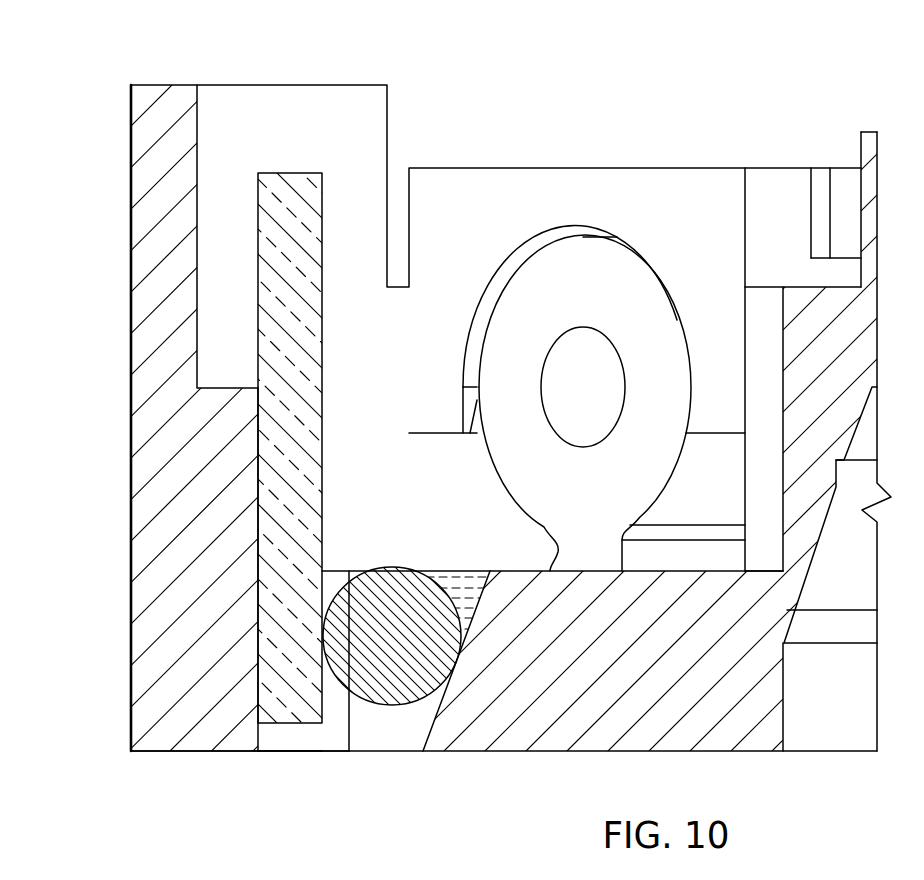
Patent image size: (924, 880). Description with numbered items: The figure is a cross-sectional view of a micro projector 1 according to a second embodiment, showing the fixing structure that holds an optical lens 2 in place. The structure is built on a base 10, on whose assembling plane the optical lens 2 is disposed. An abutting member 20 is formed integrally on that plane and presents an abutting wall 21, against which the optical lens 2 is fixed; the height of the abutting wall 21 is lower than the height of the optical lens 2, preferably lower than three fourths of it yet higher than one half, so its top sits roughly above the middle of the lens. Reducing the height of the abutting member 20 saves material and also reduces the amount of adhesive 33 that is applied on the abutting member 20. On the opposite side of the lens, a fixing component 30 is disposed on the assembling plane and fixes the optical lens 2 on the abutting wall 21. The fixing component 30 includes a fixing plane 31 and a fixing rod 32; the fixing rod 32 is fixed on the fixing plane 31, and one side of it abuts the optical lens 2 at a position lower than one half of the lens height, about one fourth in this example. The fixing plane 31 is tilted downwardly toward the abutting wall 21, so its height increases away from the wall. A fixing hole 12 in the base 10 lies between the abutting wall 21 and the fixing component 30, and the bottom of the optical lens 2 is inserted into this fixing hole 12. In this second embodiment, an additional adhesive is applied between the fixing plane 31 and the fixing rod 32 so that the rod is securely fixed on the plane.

The micro projector 1 is at (566, 100).
The optical lens 2 is at (275, 305).
The base 10 is at (839, 700).
The fixing hole 12 is at (308, 735).
The abutting member 20 is at (238, 452).
The abutting wall 21 is at (275, 752).
The fixing component 30 is at (366, 440).
The fixing plane 31 is at (427, 722).
The fixing rod 32 is at (385, 685).
The adhesive 33 is at (462, 583).